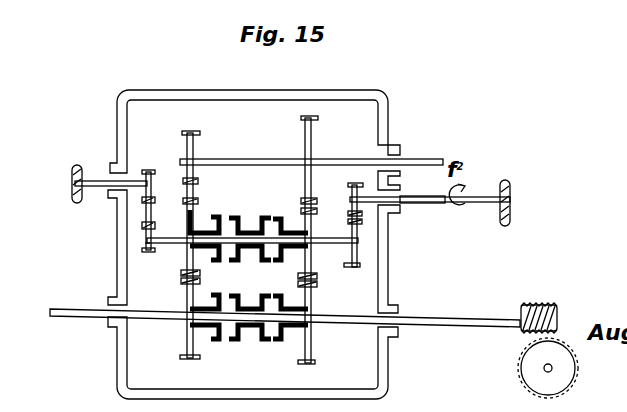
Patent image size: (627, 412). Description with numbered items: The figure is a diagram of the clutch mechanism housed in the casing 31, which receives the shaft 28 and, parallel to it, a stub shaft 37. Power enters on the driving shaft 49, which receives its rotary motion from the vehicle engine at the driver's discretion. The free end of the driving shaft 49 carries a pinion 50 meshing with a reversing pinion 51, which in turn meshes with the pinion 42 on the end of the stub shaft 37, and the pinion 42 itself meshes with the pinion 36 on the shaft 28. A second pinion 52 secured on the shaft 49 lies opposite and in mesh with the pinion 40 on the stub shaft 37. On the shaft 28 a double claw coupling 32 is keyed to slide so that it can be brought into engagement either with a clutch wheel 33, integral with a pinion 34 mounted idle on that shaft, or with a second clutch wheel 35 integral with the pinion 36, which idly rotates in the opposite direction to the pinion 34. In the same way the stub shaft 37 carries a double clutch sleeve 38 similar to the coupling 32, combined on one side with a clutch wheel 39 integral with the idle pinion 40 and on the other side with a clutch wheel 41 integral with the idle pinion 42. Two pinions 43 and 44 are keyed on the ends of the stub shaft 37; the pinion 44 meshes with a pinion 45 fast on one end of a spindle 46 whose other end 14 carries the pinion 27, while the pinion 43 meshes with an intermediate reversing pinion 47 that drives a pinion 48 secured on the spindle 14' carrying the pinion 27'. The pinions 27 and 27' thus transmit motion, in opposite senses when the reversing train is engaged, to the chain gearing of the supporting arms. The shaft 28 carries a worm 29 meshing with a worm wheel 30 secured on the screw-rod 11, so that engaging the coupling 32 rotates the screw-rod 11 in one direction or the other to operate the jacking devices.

The screw-rod 11 is at (551, 371).
The spindle 14 is at (433, 173).
The spindle 14' is at (111, 163).
The pinion 27 is at (539, 200).
The pinion 27' is at (58, 173).
The shaft 28 is at (422, 313).
The worm 29 is at (546, 322).
The worm wheel 30 is at (553, 371).
The casing 31 is at (388, 377).
The double claw coupling 32 is at (262, 342).
The clutch wheel 33 is at (278, 342).
The pinion 34 is at (316, 363).
The clutch wheel 35 is at (215, 340).
The pinion 36 is at (182, 358).
The stub shaft 37 is at (323, 240).
The double clutch sleeve 38 is at (266, 218).
The clutch wheel 39 is at (282, 246).
The pinion 40 is at (327, 268).
The clutch wheel 41 is at (220, 220).
The pinion 42 is at (188, 217).
The pinion 43 is at (142, 239).
The pinion 44 is at (350, 268).
The pinion 45 is at (358, 210).
The spindle 46 is at (433, 199).
The intermediate reversing pinion 47 is at (143, 217).
The pinion 48 is at (148, 168).
The driving shaft 49 is at (212, 158).
The pinion 50 is at (205, 118).
The reversing pinion 51 is at (214, 192).
The pinion 52 is at (314, 121).